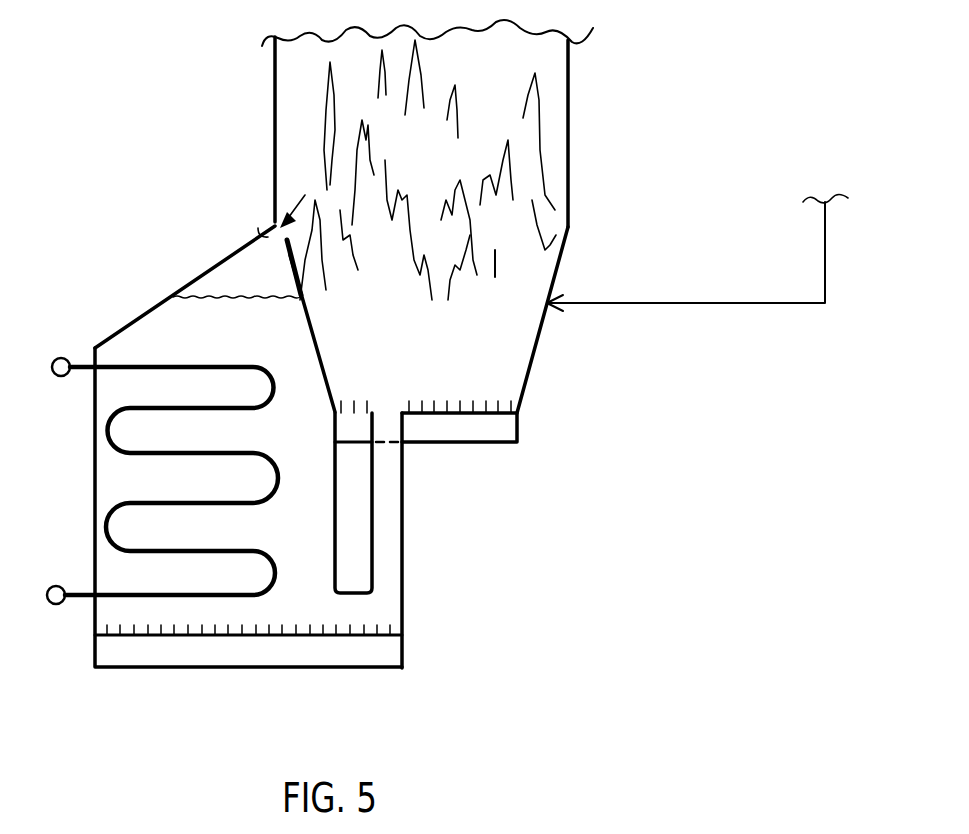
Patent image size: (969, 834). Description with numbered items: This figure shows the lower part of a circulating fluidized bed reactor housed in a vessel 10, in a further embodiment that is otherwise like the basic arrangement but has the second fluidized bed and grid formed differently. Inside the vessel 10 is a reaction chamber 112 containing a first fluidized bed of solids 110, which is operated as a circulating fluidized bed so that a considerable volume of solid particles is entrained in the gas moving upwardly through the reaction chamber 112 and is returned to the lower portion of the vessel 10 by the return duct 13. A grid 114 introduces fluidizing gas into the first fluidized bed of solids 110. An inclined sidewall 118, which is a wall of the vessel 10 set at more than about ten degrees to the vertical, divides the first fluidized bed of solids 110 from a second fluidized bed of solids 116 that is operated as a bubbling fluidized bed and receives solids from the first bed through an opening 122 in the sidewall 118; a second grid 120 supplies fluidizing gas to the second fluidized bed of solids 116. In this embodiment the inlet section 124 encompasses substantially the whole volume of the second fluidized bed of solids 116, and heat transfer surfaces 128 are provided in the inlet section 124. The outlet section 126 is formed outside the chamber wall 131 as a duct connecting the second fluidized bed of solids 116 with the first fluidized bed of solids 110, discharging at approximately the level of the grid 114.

The vessel 10 is at (569, 93).
The return duct 13 is at (828, 258).
The first fluidized bed of solids 110 is at (495, 268).
The reaction chamber 112 is at (442, 159).
The grid 114 is at (500, 425).
The second fluidized bed of solids 116 is at (168, 350).
The sidewall 118 is at (300, 320).
The second grid 120 is at (150, 645).
The opening 122 is at (273, 228).
The inlet section 124 is at (196, 496).
The outlet section 126 is at (392, 527).
The heat transfer surfaces 128 is at (105, 415).
The chamber wall 131 is at (338, 552).